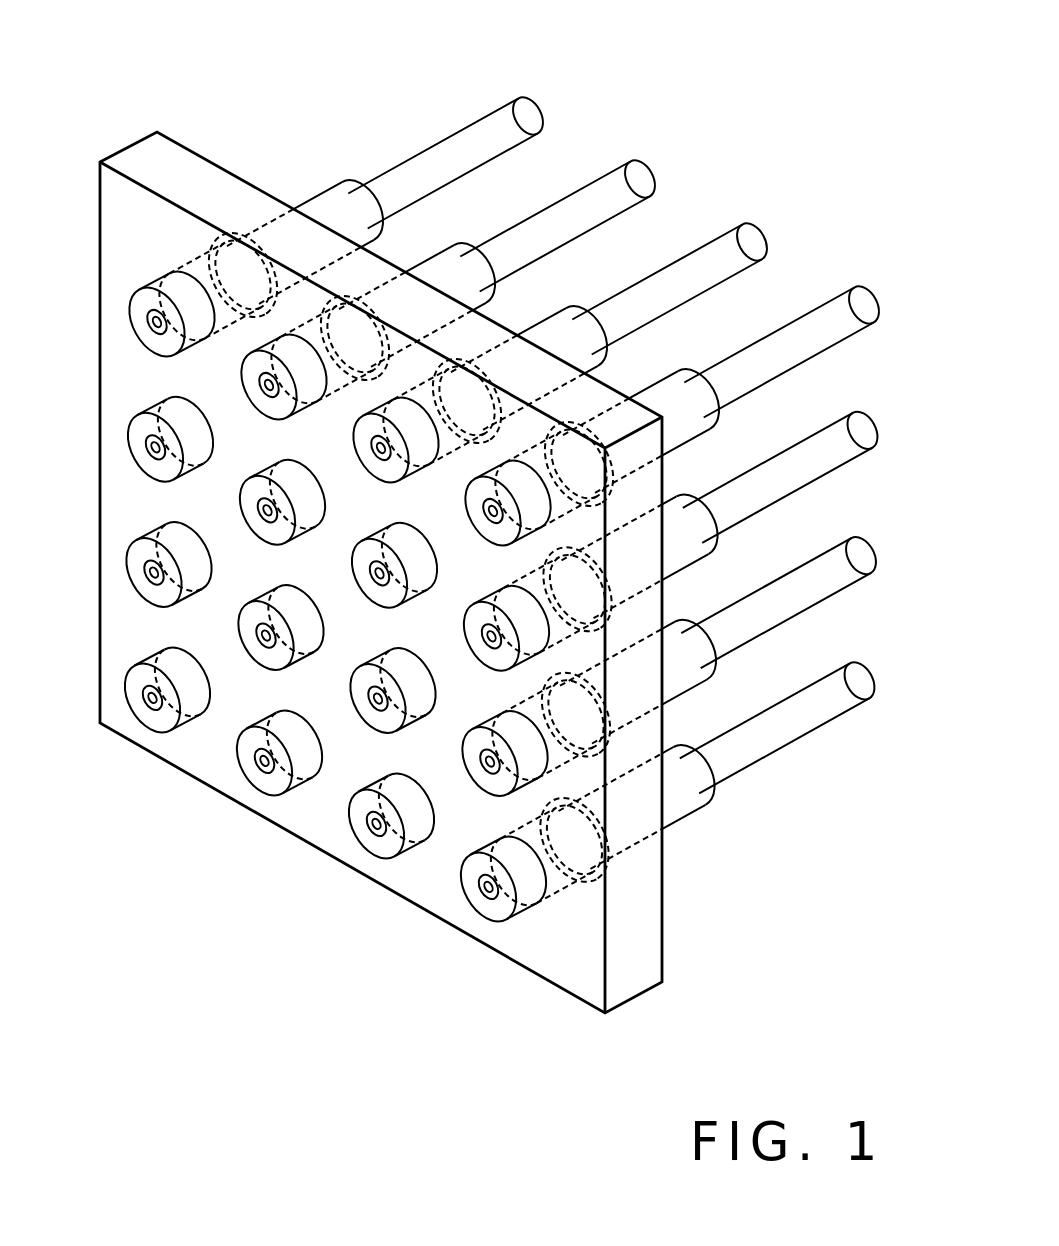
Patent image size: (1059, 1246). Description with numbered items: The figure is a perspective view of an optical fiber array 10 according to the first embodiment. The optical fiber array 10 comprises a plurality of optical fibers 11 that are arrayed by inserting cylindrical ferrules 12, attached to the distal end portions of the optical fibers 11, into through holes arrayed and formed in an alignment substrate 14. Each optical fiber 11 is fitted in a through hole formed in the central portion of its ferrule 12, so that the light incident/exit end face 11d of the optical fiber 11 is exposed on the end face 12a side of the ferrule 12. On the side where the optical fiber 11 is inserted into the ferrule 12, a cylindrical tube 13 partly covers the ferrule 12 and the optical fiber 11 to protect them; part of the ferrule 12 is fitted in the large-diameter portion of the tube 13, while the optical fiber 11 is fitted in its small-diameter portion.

The optical fiber array 10 is at (245, 126).
The optical fiber 11 is at (458, 143).
The light incident/exit end face 11d is at (140, 708).
The cylindrical ferrule 12 is at (160, 278).
The end face 12a is at (140, 342).
The cylindrical tube 13 is at (330, 205).
The alignment substrate 14 is at (647, 945).